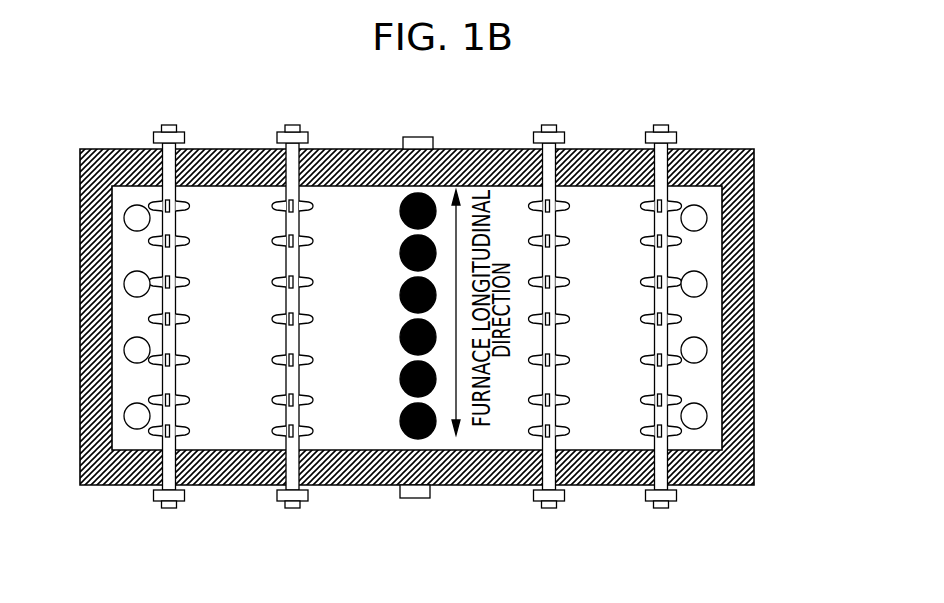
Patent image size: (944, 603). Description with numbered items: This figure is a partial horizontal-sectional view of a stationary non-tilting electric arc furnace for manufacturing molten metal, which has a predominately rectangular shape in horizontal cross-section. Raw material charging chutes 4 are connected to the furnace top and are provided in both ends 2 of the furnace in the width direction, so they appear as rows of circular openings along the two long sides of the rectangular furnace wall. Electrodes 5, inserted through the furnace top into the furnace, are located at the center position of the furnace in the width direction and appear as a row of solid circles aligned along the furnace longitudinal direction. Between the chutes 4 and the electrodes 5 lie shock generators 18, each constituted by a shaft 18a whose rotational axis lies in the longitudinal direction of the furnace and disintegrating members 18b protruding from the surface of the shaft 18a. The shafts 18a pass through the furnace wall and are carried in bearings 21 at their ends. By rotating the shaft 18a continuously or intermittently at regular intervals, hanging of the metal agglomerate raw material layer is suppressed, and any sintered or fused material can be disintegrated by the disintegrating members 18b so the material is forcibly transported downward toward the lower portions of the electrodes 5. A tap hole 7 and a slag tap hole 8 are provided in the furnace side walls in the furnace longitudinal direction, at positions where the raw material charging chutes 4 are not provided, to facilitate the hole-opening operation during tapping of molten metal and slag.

The end of the furnace in the width direction 2 is at (108, 318).
The raw material charging chute 4 is at (124, 218).
The electrode 5 is at (435, 427).
The tap hole 7 is at (415, 498).
The slag tap hole 8 is at (425, 137).
The shock generator 18 is at (313, 315).
The shaft 18a is at (341, 341).
The disintegrating member 18b is at (266, 485).
The bearing 21 is at (323, 114).